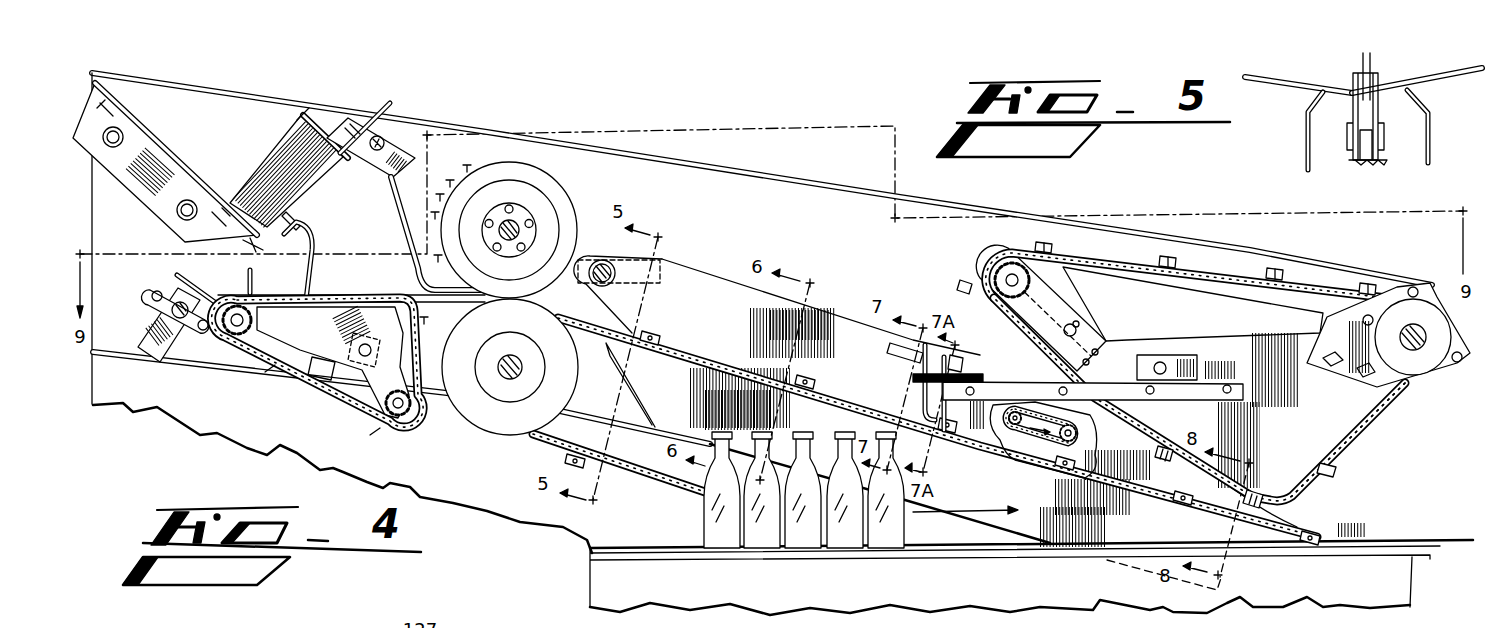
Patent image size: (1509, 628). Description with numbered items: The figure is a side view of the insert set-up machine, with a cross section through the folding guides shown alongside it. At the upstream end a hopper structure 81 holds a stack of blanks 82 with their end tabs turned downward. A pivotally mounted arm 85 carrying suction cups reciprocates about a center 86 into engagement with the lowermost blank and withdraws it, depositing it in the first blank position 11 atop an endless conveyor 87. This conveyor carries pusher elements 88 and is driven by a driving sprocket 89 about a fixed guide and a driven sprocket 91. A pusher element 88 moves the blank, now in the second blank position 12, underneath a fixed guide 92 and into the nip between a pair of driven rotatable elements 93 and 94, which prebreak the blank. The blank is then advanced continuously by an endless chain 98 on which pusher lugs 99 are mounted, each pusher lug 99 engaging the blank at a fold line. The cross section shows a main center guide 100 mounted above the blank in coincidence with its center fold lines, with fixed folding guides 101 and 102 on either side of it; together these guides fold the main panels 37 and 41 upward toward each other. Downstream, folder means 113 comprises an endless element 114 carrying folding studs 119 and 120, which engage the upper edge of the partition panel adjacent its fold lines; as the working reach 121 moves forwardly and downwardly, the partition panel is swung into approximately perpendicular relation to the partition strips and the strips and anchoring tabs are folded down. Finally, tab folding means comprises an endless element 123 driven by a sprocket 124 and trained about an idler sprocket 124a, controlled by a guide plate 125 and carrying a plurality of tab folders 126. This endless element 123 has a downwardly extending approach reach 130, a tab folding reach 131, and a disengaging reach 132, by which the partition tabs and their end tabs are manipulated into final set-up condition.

In FIG. 4, the conveyor band 11 is at (315, 178).
In FIG. 4, the support plate 12 is at (390, 296).
In FIG. 5, the main panel 37 is at (1297, 74).
In FIG. 5, the main panel 41 is at (1450, 73).
In FIG. 4, the hopper structure 81 is at (326, 118).
In FIG. 4, the stack of blanks 82 is at (258, 158).
In FIG. 4, the pivotally mounted arm 85 is at (312, 243).
In FIG. 4, the center 86 is at (181, 320).
In FIG. 4, the endless conveyor 87 is at (342, 412).
In FIG. 4, the pusher elements 88 is at (256, 289).
In FIG. 4, the driving sprocket 89 is at (237, 336).
In FIG. 4, the driven sprocket 91 is at (390, 424).
In FIG. 4, the fixed guide 92 is at (407, 197).
In FIG. 4, the rotatable element 93 is at (563, 208).
In FIG. 4, the rotatable element 94 is at (487, 417).
In FIG. 4, the endless chain 98 is at (672, 354).
In FIG. 5, the endless chain 98 is at (1360, 164).
In FIG. 4, the pusher lugs 99 is at (814, 382).
In FIG. 5, the pusher lugs 99 is at (1350, 140).
In FIG. 5, the main center guide 100 is at (1373, 69).
In FIG. 5, the fixed folding guide 101 is at (1303, 152).
In FIG. 5, the fixed folding guide 102 is at (1433, 146).
In FIG. 4, the folder means 113 is at (1026, 402).
In FIG. 4, the endless element 114 is at (1048, 402).
In FIG. 4, the folding stud 119 is at (1022, 430).
In FIG. 4, the folding stud 120 is at (1048, 446).
In FIG. 4, the working reach 121 is at (1082, 434).
In FIG. 4, the endless element 123 is at (1225, 272).
In FIG. 4, the sprocket 124 is at (1008, 256).
In FIG. 4, the idler sprocket 124a is at (1420, 285).
In FIG. 4, the guide plate 125 is at (1133, 335).
In FIG. 4, the tab folders 126 is at (1172, 256).
In FIG. 4, the approach reach 130 is at (1008, 332).
In FIG. 4, the tab folding reach 131 is at (1257, 490).
In FIG. 4, the disengaging reach 132 is at (1360, 446).